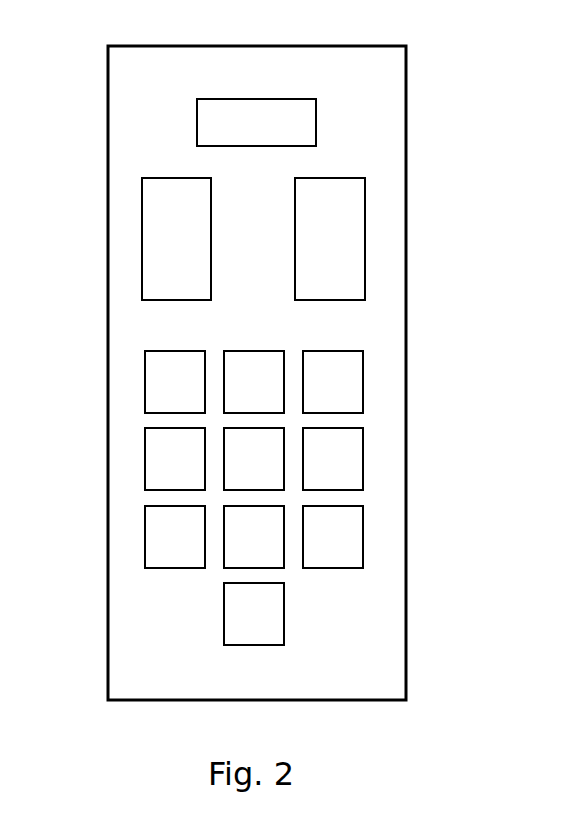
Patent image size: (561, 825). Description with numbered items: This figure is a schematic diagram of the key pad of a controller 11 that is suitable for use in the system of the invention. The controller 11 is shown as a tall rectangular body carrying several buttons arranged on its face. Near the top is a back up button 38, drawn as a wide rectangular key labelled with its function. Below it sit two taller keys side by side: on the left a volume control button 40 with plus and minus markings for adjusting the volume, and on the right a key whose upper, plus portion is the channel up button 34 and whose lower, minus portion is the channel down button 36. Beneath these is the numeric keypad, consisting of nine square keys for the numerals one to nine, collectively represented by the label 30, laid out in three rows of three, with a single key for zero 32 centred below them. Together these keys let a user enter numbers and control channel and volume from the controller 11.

The controller 11 is at (392, 88).
The back up button 38 is at (207, 137).
The volume control button 40 is at (155, 281).
The channel up button 34 is at (352, 200).
The channel down button 36 is at (352, 283).
The numeric keypad keys for numerals one to nine 30 is at (155, 400).
The zero key 32 is at (268, 613).